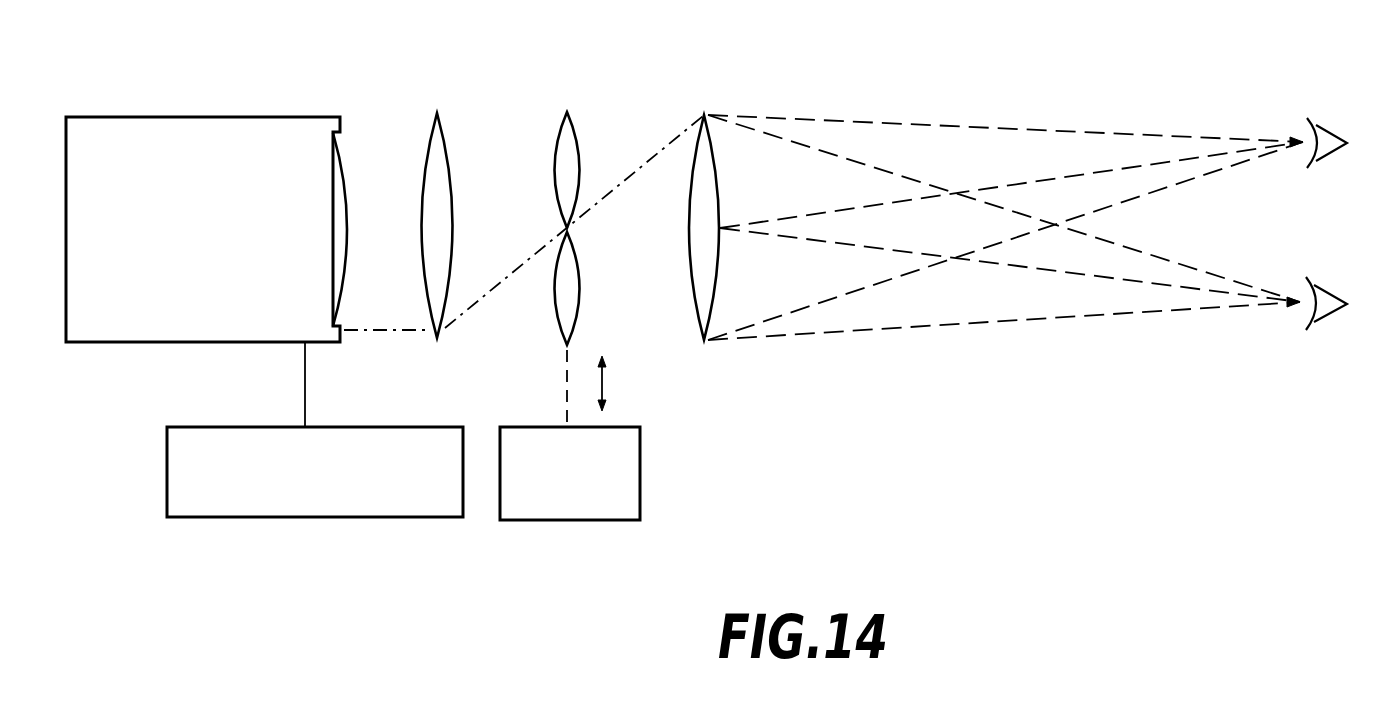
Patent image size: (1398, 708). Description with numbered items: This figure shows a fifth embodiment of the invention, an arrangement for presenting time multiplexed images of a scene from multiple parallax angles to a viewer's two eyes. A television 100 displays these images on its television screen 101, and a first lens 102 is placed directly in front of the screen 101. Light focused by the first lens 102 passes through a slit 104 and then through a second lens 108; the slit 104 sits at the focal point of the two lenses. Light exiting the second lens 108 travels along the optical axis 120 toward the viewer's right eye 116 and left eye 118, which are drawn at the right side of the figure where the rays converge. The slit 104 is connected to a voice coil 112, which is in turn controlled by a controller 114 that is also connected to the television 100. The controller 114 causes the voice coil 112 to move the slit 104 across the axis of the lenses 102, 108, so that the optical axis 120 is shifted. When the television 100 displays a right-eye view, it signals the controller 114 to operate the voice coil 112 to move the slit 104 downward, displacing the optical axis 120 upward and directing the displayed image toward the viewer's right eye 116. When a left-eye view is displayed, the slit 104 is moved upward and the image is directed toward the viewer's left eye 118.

The television 100 is at (175, 343).
The television screen 101 is at (337, 134).
The first lens 102 is at (437, 113).
The slit 104 is at (567, 112).
The second lens 108 is at (703, 116).
The voice coil 112 is at (595, 520).
The controller 114 is at (332, 518).
The viewer's right eye 116 is at (1342, 82).
The viewer's left eye 118 is at (1323, 323).
The optical axis 120 is at (1002, 182).